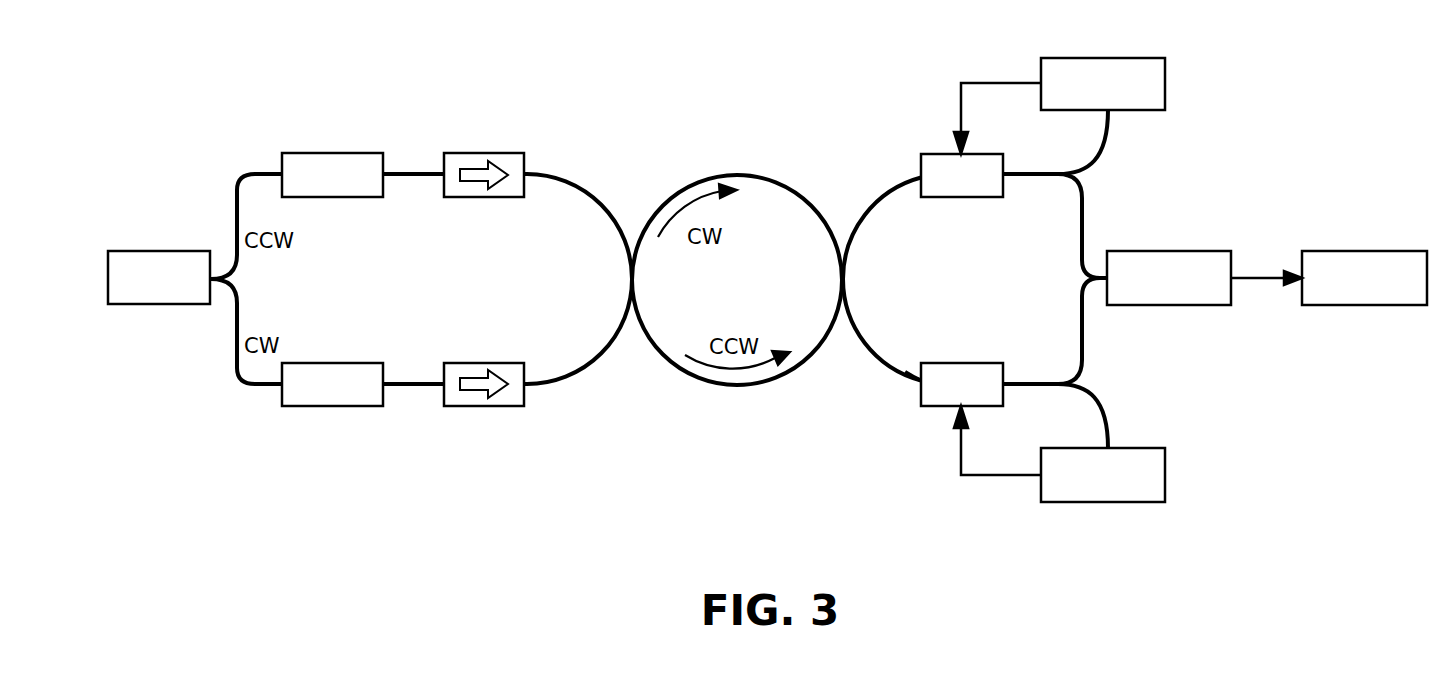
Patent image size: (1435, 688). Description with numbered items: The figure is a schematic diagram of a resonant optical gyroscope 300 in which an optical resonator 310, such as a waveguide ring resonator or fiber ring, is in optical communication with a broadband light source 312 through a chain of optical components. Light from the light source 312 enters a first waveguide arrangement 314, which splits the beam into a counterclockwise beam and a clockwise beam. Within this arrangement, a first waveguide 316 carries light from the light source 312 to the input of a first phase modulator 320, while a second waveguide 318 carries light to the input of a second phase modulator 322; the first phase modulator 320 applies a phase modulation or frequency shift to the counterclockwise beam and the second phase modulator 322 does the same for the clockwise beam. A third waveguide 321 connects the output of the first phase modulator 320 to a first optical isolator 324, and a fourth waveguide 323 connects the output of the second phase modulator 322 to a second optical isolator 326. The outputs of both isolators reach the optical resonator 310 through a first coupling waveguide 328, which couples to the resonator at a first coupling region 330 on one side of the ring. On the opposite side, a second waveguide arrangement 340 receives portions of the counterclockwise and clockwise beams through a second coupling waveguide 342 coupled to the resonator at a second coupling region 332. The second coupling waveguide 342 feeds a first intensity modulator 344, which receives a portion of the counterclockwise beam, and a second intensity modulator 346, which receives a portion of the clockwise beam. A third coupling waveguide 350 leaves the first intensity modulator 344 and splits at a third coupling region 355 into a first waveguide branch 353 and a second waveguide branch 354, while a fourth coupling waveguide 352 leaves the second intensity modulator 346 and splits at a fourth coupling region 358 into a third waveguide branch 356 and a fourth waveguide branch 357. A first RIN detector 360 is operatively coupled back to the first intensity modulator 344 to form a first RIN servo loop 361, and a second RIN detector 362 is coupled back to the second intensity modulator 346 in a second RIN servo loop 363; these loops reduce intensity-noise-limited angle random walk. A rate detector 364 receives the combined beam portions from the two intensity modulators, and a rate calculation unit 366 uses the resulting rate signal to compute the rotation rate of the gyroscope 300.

The resonant optical gyroscope 300 is at (622, 88).
The optical resonator 310 is at (752, 174).
The broadband light source 312 is at (172, 250).
The first waveguide arrangement 314 is at (415, 430).
The first waveguide 316 is at (236, 219).
The second waveguide 318 is at (236, 337).
The first phase modulator 320 is at (350, 152).
The third waveguide 321 is at (402, 178).
The second phase modulator 322 is at (360, 362).
The fourth waveguide 323 is at (432, 378).
The first optical isolator 324 is at (500, 152).
The second optical isolator 326 is at (500, 362).
The first coupling waveguide 328 is at (610, 357).
The first coupling region 330 is at (636, 274).
The second coupling region 332 is at (838, 283).
The second waveguide arrangement 340 is at (1125, 203).
The second coupling waveguide 342 is at (865, 357).
The first intensity modulator 344 is at (953, 197).
The second intensity modulator 346 is at (953, 362).
The third coupling waveguide 350 is at (1040, 170).
The fourth coupling waveguide 352 is at (1033, 380).
The first waveguide branch 353 is at (1108, 122).
The second waveguide branch 354 is at (1084, 230).
The third coupling region 355 is at (1058, 180).
The third waveguide branch 356 is at (1108, 418).
The fourth waveguide branch 357 is at (1084, 336).
The fourth coupling region 358 is at (1058, 390).
The first RIN detector 360 is at (1108, 57).
The first RIN servo loop 361 is at (1000, 82).
The second RIN detector 362 is at (1105, 503).
The second RIN servo loop 363 is at (993, 476).
The rate detector 364 is at (1190, 250).
The rate calculation unit 366 is at (1365, 250).